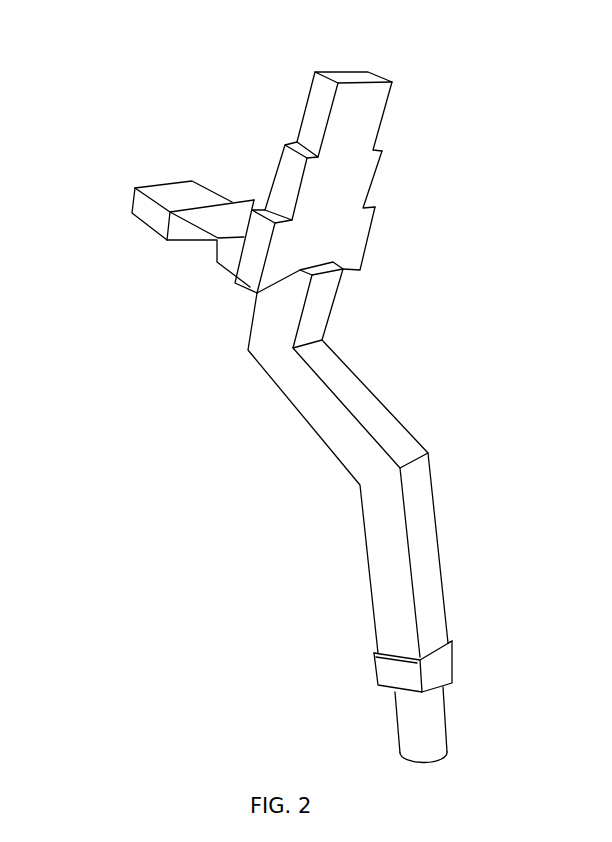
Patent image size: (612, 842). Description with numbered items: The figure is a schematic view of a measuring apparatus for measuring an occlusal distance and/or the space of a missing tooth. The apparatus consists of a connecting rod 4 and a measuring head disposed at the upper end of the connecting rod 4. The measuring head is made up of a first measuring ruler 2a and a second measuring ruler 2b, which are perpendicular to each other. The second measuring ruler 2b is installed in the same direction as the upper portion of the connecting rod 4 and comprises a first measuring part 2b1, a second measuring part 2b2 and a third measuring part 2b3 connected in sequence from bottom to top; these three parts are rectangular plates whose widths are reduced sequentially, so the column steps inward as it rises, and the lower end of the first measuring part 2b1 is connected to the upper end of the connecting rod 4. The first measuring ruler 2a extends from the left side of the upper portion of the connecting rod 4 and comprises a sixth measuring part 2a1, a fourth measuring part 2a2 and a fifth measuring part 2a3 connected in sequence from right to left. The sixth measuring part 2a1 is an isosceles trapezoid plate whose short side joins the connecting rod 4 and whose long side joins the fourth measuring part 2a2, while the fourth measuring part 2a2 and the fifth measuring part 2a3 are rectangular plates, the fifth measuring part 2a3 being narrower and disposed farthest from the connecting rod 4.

The first measuring ruler 2a is at (172, 248).
The sixth measuring part 2a1 is at (228, 265).
The fourth measuring part 2a2 is at (218, 220).
The fifth measuring part 2a3 is at (177, 193).
The second measuring ruler 2b is at (363, 153).
The first measuring part 2b1 is at (378, 247).
The second measuring part 2b2 is at (372, 180).
The third measuring part 2b3 is at (370, 117).
The connecting rod 4 is at (387, 550).